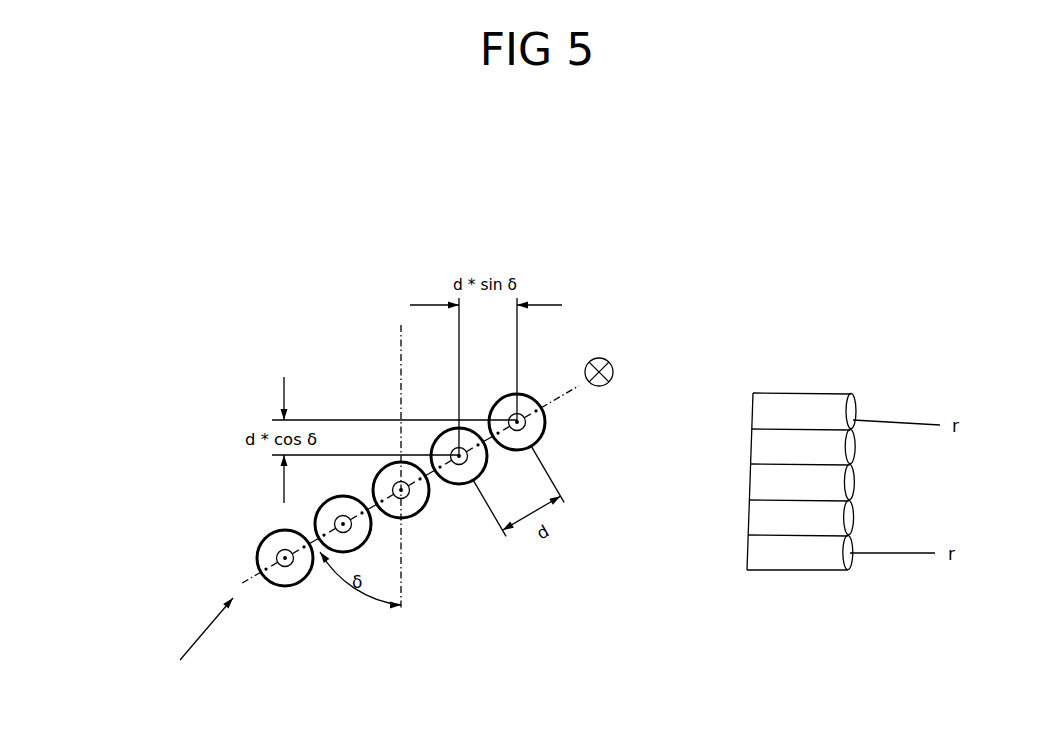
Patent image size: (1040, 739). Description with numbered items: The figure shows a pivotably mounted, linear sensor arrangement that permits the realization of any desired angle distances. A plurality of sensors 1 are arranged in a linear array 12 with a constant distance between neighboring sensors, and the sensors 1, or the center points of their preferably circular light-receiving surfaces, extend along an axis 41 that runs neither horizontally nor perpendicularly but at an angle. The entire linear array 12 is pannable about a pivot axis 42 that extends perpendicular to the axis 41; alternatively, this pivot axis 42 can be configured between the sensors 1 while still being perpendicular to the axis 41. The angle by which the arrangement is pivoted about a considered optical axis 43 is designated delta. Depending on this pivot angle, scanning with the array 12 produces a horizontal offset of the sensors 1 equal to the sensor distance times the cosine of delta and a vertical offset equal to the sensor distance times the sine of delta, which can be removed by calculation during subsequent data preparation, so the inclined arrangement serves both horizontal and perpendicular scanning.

The sensor 1 is at (277, 587).
The linear array 12 is at (188, 644).
The axis 41 is at (563, 398).
The pivot axis 42 is at (601, 357).
The optical axis 43 is at (400, 383).